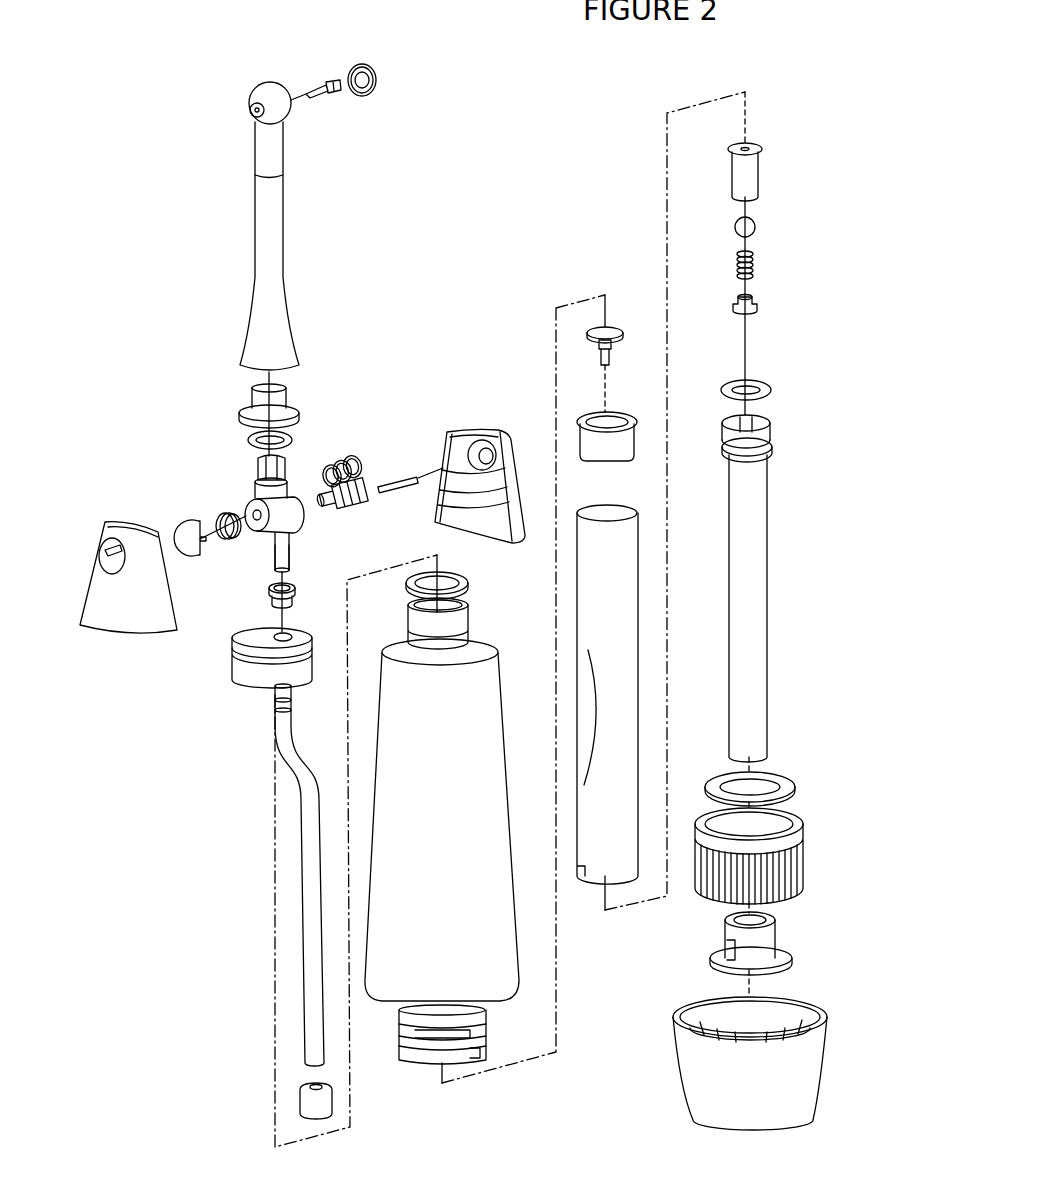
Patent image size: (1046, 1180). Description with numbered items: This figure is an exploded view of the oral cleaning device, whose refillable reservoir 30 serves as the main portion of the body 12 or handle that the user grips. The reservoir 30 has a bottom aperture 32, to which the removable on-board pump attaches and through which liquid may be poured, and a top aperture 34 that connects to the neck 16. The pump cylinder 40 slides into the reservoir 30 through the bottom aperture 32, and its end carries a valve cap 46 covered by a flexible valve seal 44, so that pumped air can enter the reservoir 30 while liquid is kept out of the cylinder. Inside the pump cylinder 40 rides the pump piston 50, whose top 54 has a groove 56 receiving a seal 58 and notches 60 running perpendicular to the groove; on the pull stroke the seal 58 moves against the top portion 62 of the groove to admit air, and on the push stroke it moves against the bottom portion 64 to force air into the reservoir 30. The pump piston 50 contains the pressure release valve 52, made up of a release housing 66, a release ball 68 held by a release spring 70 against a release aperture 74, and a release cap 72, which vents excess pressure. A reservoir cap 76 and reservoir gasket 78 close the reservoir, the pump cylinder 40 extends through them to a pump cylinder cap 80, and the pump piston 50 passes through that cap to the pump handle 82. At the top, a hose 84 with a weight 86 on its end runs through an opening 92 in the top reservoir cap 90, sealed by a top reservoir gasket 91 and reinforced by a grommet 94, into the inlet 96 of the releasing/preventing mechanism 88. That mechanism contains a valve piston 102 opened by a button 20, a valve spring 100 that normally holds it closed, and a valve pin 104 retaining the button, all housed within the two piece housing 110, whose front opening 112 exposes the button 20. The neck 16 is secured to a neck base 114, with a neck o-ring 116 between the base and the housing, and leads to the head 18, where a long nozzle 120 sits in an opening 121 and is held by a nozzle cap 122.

The body 12 is at (542, 1038).
The neck 16 is at (275, 227).
The head 18 is at (272, 85).
The button 20 is at (173, 523).
The refillable reservoir 30 is at (507, 953).
The bottom aperture 32 is at (426, 1067).
The top aperture 34 is at (470, 618).
The pump cylinder 40 is at (627, 696).
The flexible valve seal 44 is at (614, 325).
The valve cap 46 is at (577, 425).
The pump piston 50 is at (757, 562).
The pressure release valve 52 is at (812, 200).
The top of the pump piston 54 is at (850, 442).
The groove 56 is at (770, 440).
The seal 58 is at (770, 388).
The notches 60 is at (760, 422).
The top portion of the groove 62 is at (735, 432).
The bottom portion of the groove 64 is at (730, 450).
The release housing 66 is at (753, 172).
The release ball 68 is at (755, 227).
The release spring 70 is at (753, 268).
The release cap 72 is at (757, 302).
The release aperture 74 is at (746, 146).
The reservoir cap 76 is at (803, 866).
The reservoir gasket 78 is at (795, 784).
The pump cylinder cap 80 is at (770, 945).
The pump handle 82 is at (820, 1046).
The hose 84 is at (310, 983).
The weight 86 is at (303, 1104).
The releasing/preventing mechanism 88 is at (302, 515).
The top reservoir cap 90 is at (238, 675).
The top reservoir gasket 91 is at (470, 577).
The opening 92 is at (293, 632).
The grommet 94 is at (295, 587).
The inlet 96 is at (278, 557).
The valve spring 100 is at (219, 517).
The valve piston 102 is at (360, 505).
The valve pin 104 is at (397, 470).
The two piece housing 110 is at (130, 627).
The opening 112 is at (107, 563).
The neck base 114 is at (283, 397).
The neck o-ring 116 is at (290, 440).
The long nozzle 120 is at (320, 95).
The opening 121 is at (252, 116).
The nozzle cap 122 is at (378, 80).